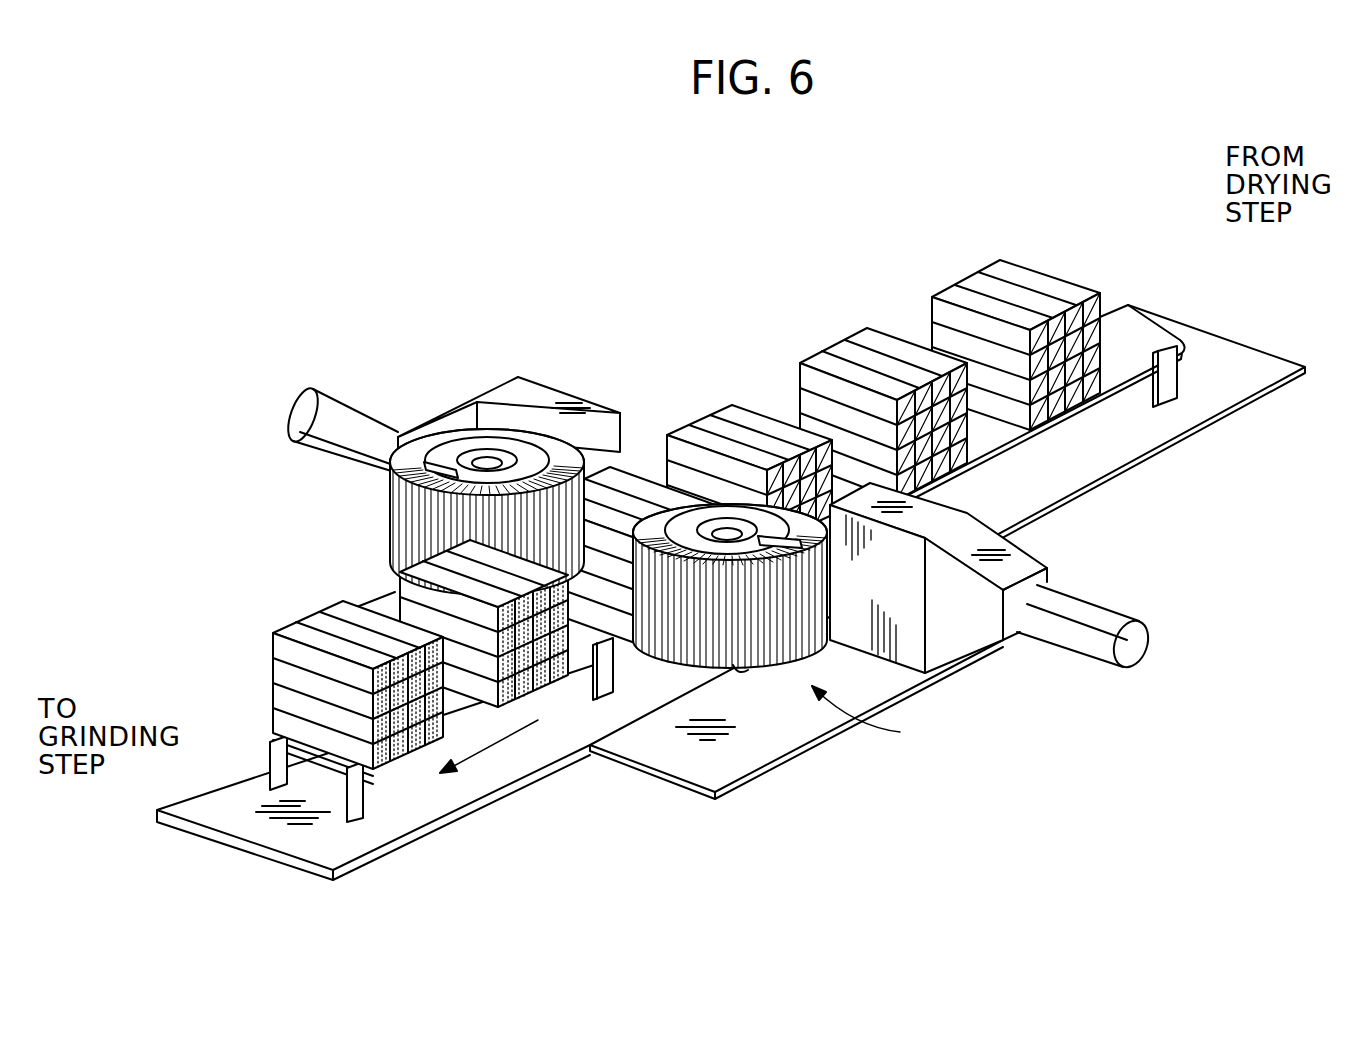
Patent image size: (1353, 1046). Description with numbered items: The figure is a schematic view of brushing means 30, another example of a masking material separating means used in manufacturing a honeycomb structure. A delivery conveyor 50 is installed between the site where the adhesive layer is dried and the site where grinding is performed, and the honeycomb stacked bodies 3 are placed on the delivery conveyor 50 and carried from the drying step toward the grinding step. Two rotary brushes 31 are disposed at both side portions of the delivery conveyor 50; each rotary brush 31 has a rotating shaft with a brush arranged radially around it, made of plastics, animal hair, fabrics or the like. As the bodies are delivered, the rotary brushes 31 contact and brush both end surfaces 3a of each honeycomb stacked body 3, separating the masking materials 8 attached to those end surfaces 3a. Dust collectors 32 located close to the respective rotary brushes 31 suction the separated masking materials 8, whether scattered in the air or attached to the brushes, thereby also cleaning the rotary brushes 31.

The honeycomb stacked body 3 is at (980, 277).
The end surface 3a is at (1057, 403).
The masking material 8 is at (1093, 372).
The brushing means 30 is at (847, 720).
The rotary brush 31 is at (347, 469).
The dust collector 32 is at (545, 398).
The delivery conveyor 50 is at (1142, 342).